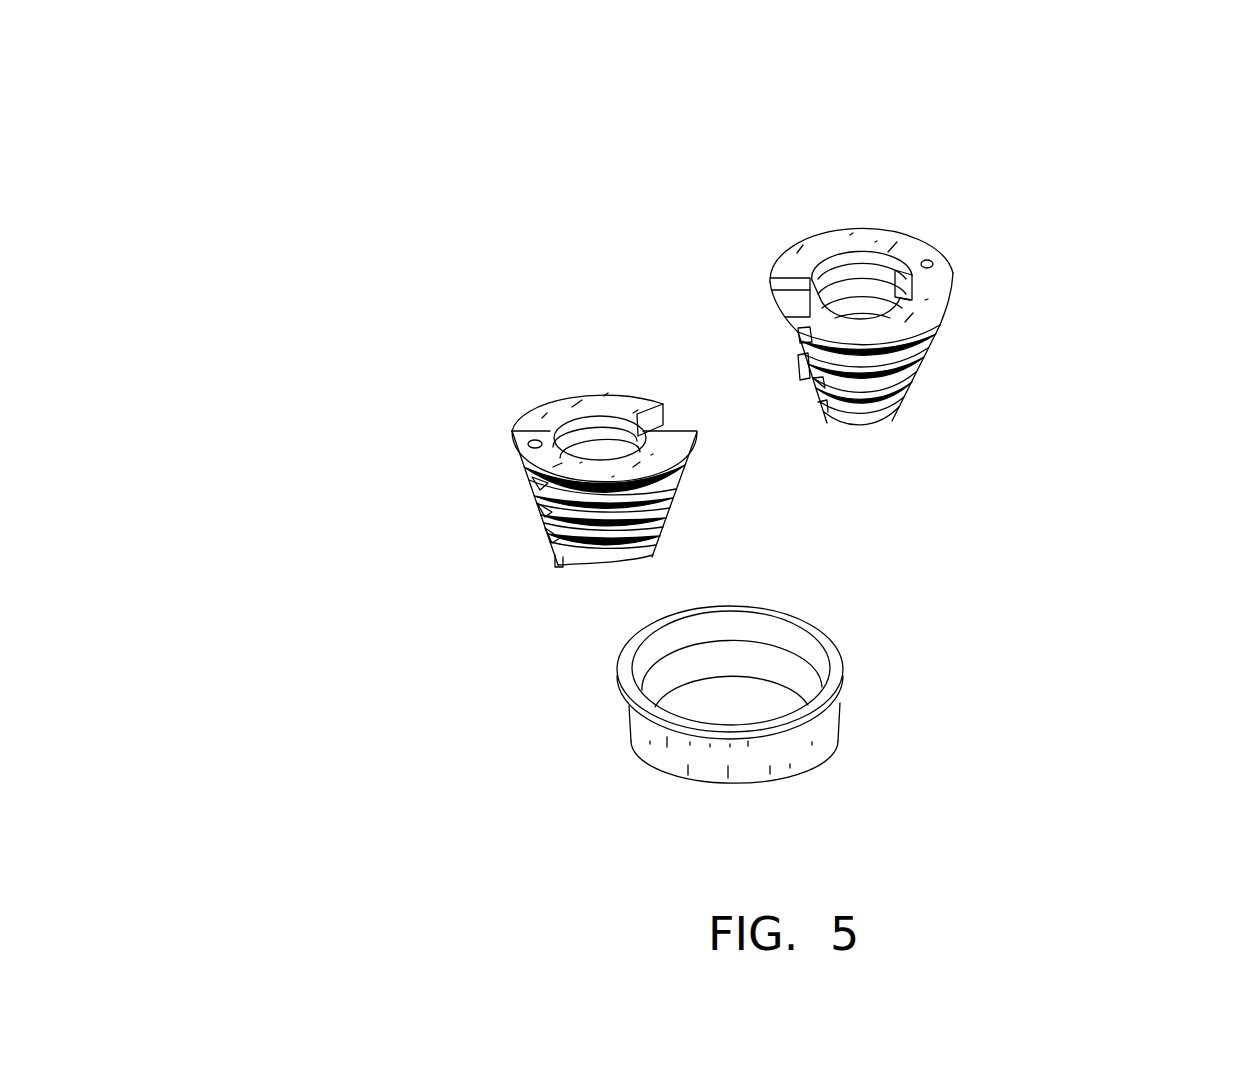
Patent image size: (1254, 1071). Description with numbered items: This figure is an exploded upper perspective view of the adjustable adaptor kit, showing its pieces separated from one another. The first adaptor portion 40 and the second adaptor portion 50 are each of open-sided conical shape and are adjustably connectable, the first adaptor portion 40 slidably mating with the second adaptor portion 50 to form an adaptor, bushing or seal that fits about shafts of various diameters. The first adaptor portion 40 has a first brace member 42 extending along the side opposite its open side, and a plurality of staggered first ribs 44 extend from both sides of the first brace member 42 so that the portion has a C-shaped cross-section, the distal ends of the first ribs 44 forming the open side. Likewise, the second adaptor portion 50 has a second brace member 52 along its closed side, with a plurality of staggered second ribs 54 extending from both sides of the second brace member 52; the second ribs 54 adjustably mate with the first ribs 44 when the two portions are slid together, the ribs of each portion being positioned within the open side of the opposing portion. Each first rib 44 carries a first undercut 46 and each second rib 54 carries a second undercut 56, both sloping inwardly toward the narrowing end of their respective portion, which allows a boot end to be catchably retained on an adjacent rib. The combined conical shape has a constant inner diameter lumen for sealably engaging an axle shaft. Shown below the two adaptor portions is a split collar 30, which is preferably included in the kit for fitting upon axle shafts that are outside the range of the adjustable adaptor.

The split collar 30 is at (790, 738).
The first adaptor portion 40 is at (452, 454).
The first brace member 42 is at (523, 477).
The first ribs 44 is at (608, 522).
The first undercut 46 is at (540, 530).
The second adaptor portion 50 is at (1000, 260).
The second brace member 52 is at (903, 290).
The second ribs 54 is at (895, 358).
The second undercut 56 is at (935, 333).